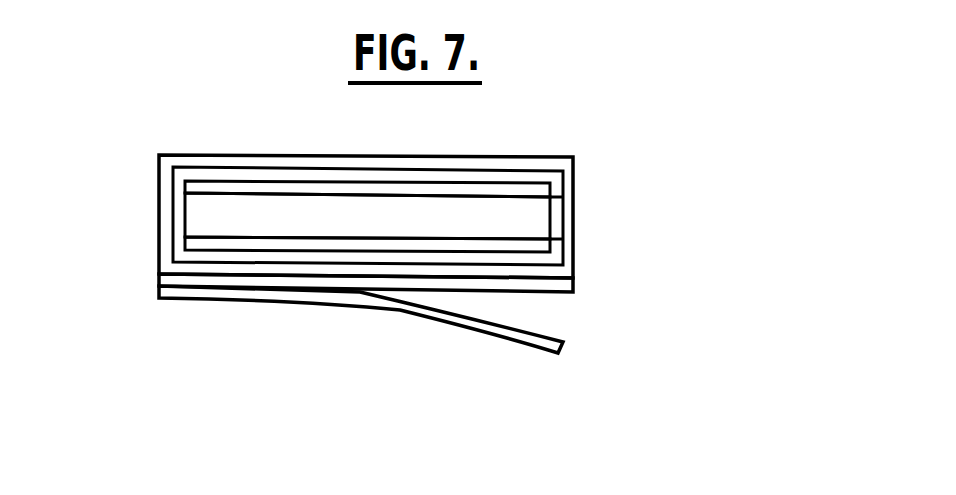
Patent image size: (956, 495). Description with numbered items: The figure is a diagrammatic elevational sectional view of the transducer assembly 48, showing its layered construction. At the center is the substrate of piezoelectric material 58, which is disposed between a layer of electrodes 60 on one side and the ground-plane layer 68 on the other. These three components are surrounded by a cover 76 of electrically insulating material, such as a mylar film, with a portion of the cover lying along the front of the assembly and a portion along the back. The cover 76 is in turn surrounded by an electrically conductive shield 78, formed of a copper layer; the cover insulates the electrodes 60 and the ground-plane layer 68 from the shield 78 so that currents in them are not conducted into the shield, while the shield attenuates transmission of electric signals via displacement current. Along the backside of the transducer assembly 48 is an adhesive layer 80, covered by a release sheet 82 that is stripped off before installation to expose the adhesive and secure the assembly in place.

The transducer assembly 48 is at (145, 175).
The cover 76 is at (563, 171).
The layer of electrodes 60 is at (550, 183).
The substrate of piezoelectric material 58 is at (550, 220).
The ground-plane layer 68 is at (550, 250).
The shield 78 is at (563, 265).
The adhesive layer 80 is at (575, 285).
The release sheet 82 is at (563, 350).